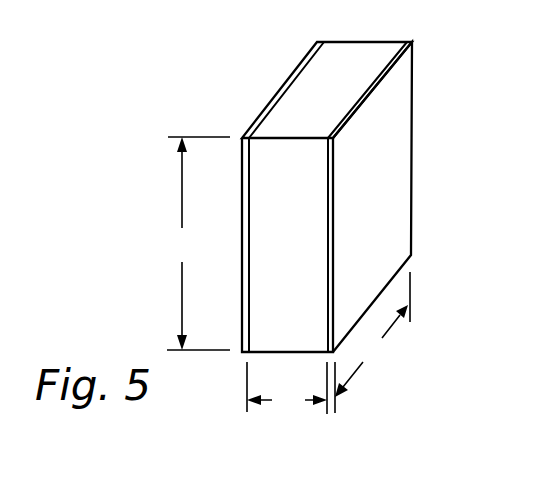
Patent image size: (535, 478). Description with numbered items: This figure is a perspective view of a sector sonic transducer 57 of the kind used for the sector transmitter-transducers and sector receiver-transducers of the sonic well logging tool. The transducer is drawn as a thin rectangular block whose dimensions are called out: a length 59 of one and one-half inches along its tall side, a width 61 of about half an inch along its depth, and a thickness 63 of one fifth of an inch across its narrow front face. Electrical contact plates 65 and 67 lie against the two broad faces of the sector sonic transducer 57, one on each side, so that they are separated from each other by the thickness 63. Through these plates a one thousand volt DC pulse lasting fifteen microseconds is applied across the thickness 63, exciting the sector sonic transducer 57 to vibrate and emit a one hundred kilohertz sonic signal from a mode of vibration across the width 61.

The sector sonic transducer 57 is at (301, 83).
The electrical contact plate 65 is at (263, 112).
The electrical contact plate 67 is at (397, 183).
The length 59 is at (197, 243).
The width 61 is at (372, 342).
The thickness 63 is at (287, 388).